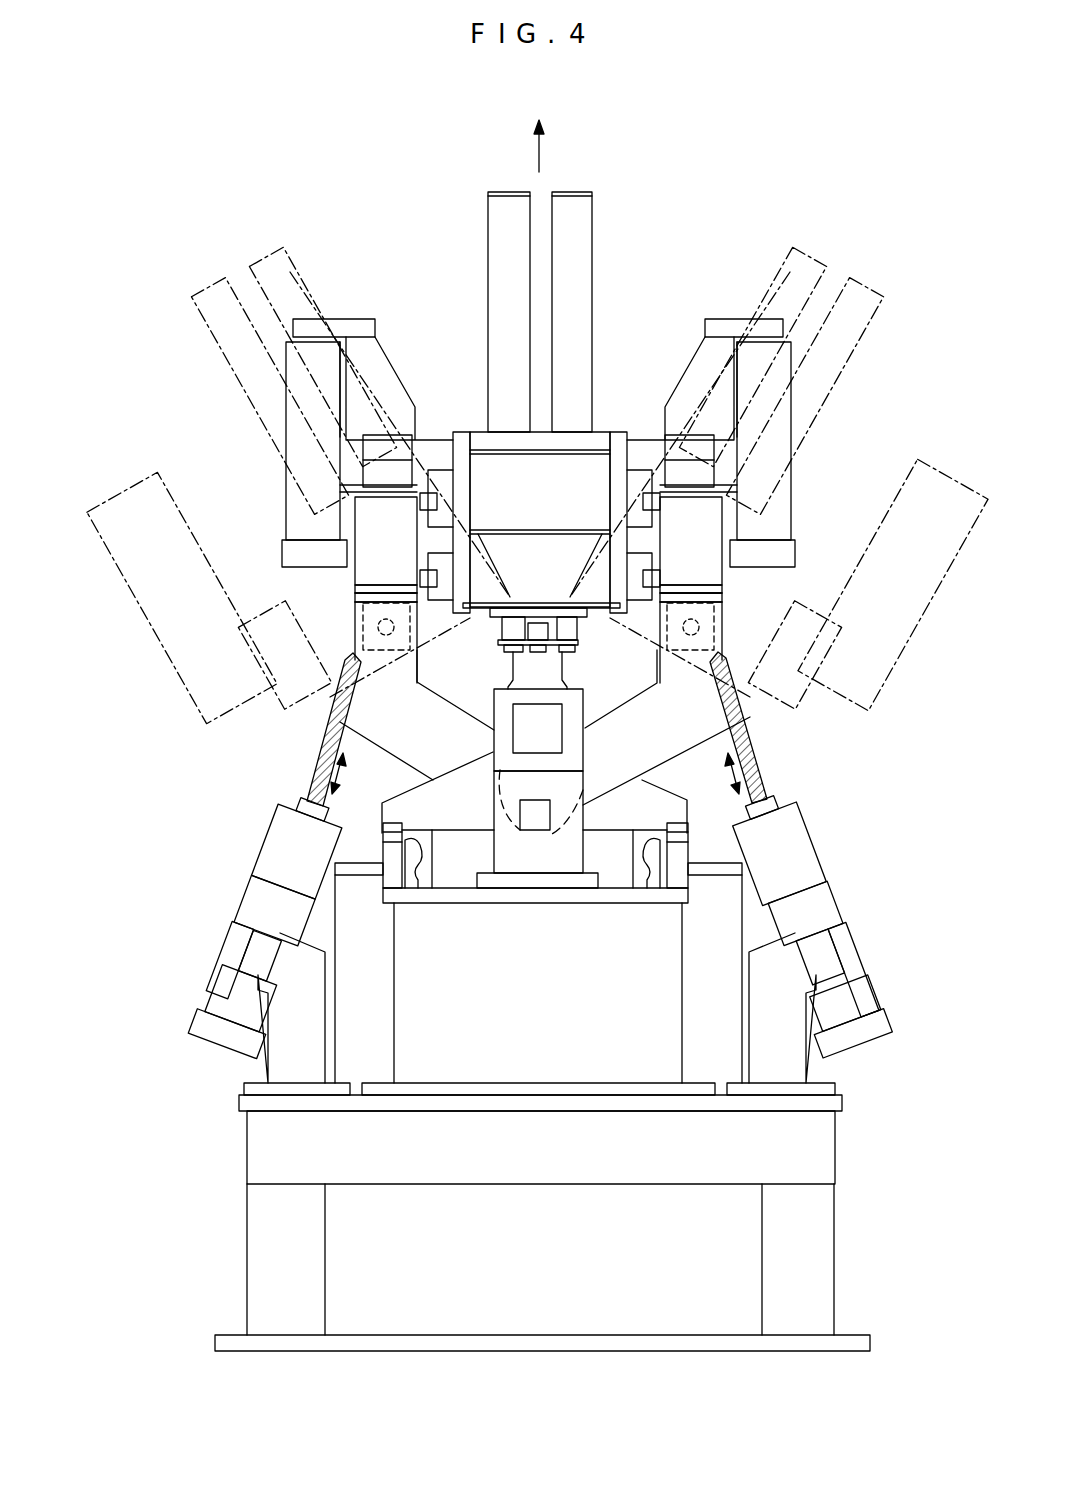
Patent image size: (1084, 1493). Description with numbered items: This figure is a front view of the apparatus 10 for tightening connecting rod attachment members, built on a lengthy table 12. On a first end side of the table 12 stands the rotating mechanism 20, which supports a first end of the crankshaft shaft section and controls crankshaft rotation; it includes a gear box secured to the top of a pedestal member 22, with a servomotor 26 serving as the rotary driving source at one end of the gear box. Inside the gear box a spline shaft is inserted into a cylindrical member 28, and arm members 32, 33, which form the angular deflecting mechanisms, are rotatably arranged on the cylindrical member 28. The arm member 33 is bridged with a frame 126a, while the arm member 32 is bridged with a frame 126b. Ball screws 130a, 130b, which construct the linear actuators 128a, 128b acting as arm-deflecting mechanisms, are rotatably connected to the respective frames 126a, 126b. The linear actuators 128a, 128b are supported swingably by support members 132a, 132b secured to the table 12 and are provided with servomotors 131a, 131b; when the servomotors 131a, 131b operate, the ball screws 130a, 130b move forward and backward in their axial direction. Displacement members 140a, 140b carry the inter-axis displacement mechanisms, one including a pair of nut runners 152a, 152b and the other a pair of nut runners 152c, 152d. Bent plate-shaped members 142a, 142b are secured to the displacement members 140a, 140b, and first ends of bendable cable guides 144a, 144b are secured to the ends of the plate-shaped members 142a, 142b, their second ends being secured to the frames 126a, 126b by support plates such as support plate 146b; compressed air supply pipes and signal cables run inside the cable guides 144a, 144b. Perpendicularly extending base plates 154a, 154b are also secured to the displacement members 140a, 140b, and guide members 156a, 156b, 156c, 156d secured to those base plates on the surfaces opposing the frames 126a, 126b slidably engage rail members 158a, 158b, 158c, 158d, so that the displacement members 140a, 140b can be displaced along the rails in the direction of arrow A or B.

The apparatus for tightening connecting rod attachment members 10 is at (750, 162).
The table 12 is at (603, 1152).
The rotating mechanism 20 is at (590, 780).
The pedestal member 22 is at (498, 1062).
The servomotor 26 is at (555, 735).
The cylindrical member 28 is at (560, 745).
The arm member 32 is at (855, 694).
The arm member 33 is at (212, 652).
The frame 126a is at (355, 573).
The frame 126b is at (722, 573).
The linear actuator 128a is at (243, 880).
The linear actuator 128b is at (845, 898).
The ball screw 130a is at (345, 720).
The ball screw 130b is at (748, 740).
The servomotor 131a is at (243, 970).
The servomotor 131b is at (857, 1004).
The support member 132a is at (285, 1022).
The support member 132b is at (773, 1068).
The displacement member 140a is at (368, 453).
The displacement member 140b is at (712, 453).
The plate-shaped member 142a is at (368, 318).
The plate-shaped member 142b is at (712, 320).
The cable guide 144a is at (312, 372).
The cable guide 144b is at (770, 392).
The support plate 146b is at (320, 540).
The nut runner 152a is at (207, 270).
The nut runner 152b is at (270, 242).
The nut runner 152c is at (784, 240).
The nut runner 152d is at (872, 272).
The base plate 154a is at (455, 440).
The base plate 154b is at (622, 440).
The guide member 156a is at (417, 500).
The guide member 156b is at (663, 500).
The guide member 156c is at (417, 600).
The guide member 156d is at (660, 600).
The rail member 158a is at (410, 487).
The rail member 158b is at (670, 487).
The rail member 158c is at (410, 590).
The rail member 158d is at (667, 590).